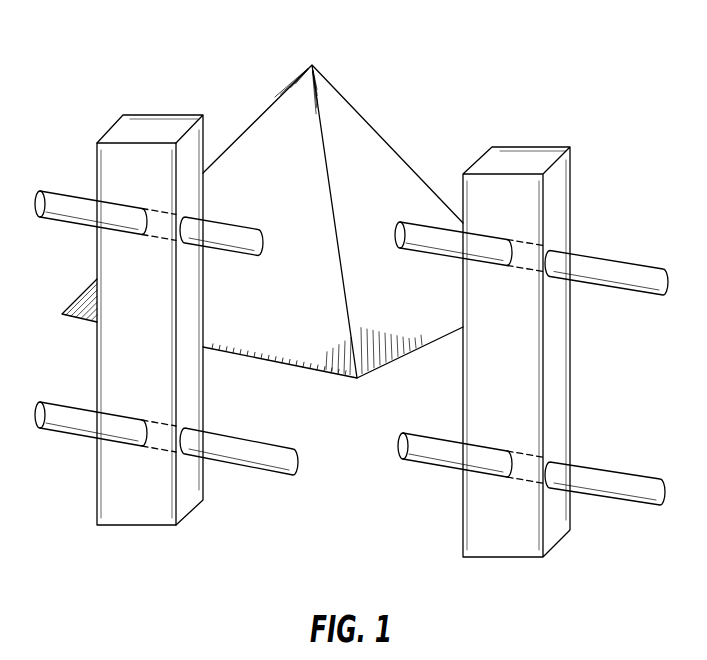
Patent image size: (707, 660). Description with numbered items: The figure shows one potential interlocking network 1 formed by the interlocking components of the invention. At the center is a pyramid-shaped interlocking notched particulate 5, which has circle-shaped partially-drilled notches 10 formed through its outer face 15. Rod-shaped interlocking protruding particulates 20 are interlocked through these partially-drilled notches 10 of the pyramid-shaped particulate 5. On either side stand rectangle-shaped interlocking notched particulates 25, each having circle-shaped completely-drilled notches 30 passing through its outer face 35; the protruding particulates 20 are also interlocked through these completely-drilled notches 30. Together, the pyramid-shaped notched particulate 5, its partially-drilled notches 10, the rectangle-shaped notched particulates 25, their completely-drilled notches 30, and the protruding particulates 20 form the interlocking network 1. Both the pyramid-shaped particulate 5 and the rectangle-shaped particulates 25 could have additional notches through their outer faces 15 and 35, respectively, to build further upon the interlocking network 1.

The interlocking network 1 is at (600, 53).
The pyramid-shaped interlocking notched particulate 5 is at (352, 115).
The circle-shaped partially-drilled notches 10 is at (260, 232).
The outer face 15 is at (308, 368).
The rod-shaped interlocking protruding particulates 20 is at (623, 292).
The rectangle-shaped interlocking notched particulates 25 is at (113, 495).
The circle-shaped completely-drilled notches 30 is at (140, 237).
The outer face 35 is at (97, 370).